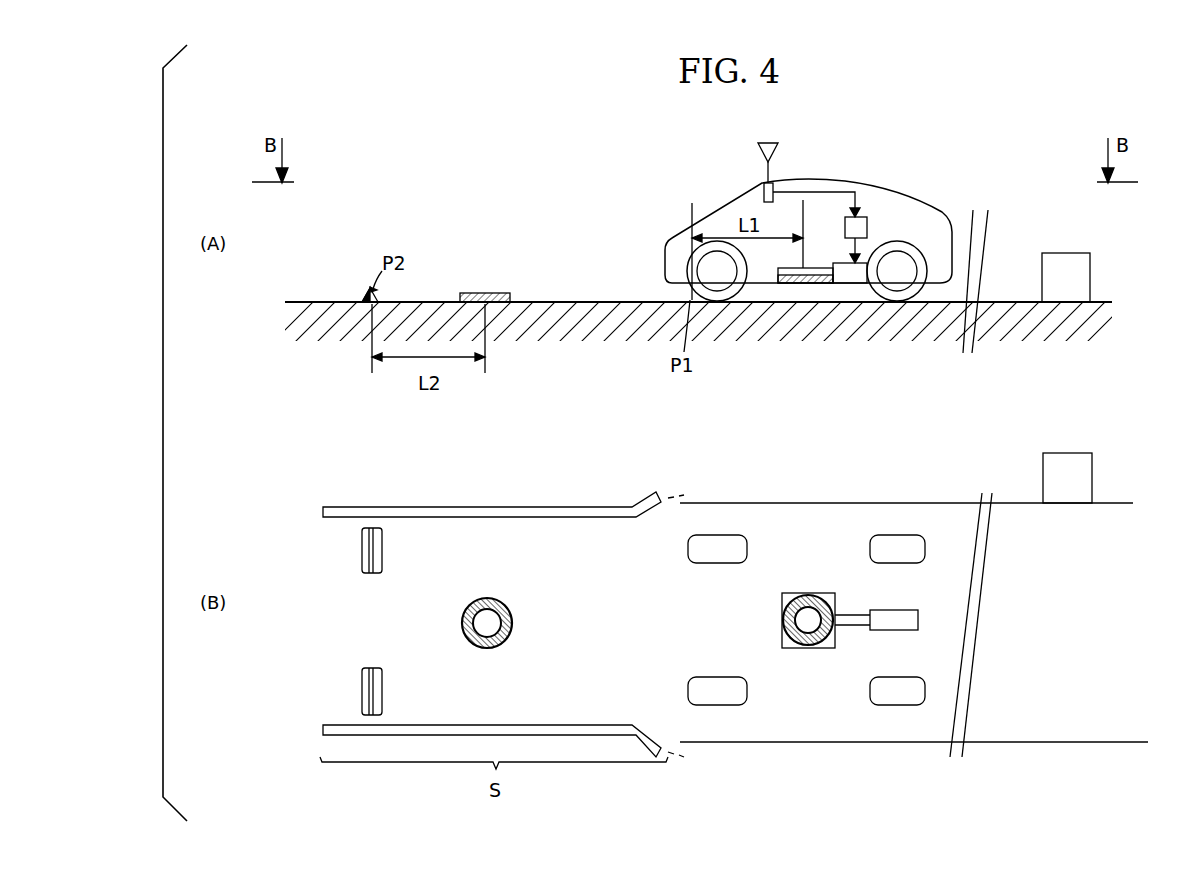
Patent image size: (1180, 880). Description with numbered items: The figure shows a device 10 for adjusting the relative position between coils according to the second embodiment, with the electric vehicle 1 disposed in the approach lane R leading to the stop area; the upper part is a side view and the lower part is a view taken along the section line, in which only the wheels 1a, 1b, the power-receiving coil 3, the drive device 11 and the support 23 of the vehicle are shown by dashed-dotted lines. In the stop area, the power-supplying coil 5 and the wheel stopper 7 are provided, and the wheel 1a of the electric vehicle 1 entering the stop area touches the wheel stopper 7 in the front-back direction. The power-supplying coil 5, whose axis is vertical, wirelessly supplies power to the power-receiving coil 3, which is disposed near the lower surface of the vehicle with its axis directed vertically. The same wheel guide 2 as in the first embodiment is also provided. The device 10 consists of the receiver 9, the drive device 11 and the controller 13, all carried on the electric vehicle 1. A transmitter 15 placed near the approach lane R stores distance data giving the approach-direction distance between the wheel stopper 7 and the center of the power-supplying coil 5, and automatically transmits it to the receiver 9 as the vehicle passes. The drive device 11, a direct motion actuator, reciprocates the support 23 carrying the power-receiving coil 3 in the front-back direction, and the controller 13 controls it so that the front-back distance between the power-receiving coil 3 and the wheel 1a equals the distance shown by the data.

The electric vehicle 1 is at (868, 182).
The wheel 1a is at (728, 250).
The wheel 1b is at (926, 255).
The wheel guide 2 is at (570, 517).
The power-receiving coil 3 is at (814, 290).
The power-supplying coil 5 is at (500, 293).
The wheel stopper 7 is at (362, 299).
The receiver 9 is at (772, 146).
The device for adjusting a relative position between coils 10 is at (374, 150).
The drive device 11 is at (854, 290).
The controller 13 is at (868, 226).
The transmitter 15 is at (1077, 288).
The support 23 is at (813, 268).
The approach lane R is at (768, 293).